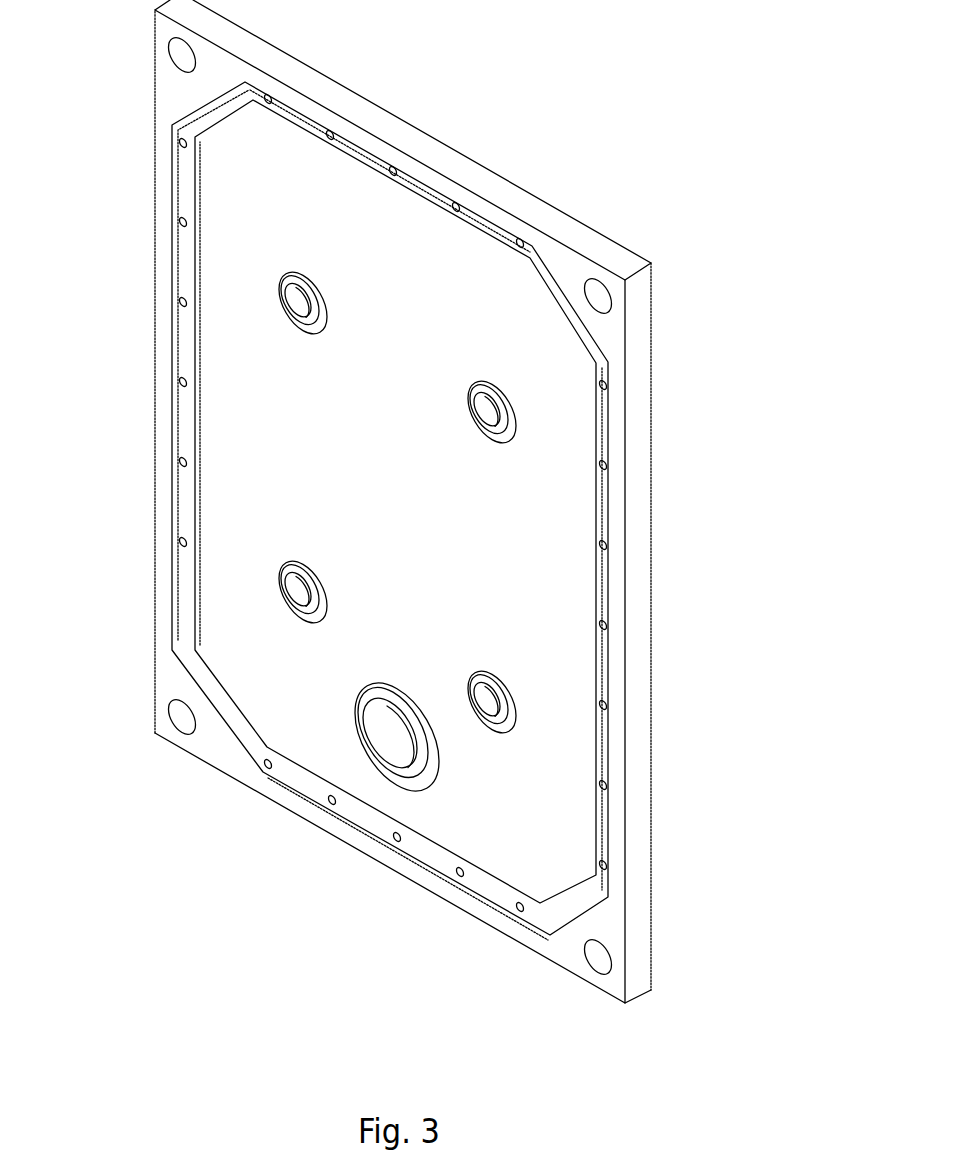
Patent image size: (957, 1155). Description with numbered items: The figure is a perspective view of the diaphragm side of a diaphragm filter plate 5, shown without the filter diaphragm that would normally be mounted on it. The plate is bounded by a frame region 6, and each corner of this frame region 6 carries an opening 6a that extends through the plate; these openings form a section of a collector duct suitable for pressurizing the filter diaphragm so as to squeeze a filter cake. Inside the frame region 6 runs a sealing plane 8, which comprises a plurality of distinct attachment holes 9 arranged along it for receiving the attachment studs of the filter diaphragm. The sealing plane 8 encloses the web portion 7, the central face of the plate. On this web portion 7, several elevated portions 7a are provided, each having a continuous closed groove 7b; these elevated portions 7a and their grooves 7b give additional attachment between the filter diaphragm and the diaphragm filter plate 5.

The diaphragm filter plate 5 is at (200, 897).
The frame region 6 is at (652, 588).
The opening 6a is at (183, 55).
The web portion 7 is at (223, 397).
The elevated portion 7a is at (493, 417).
The continuous closed groove 7b is at (507, 401).
The sealing plane 8 is at (187, 267).
The attachment hole 9 is at (606, 705).